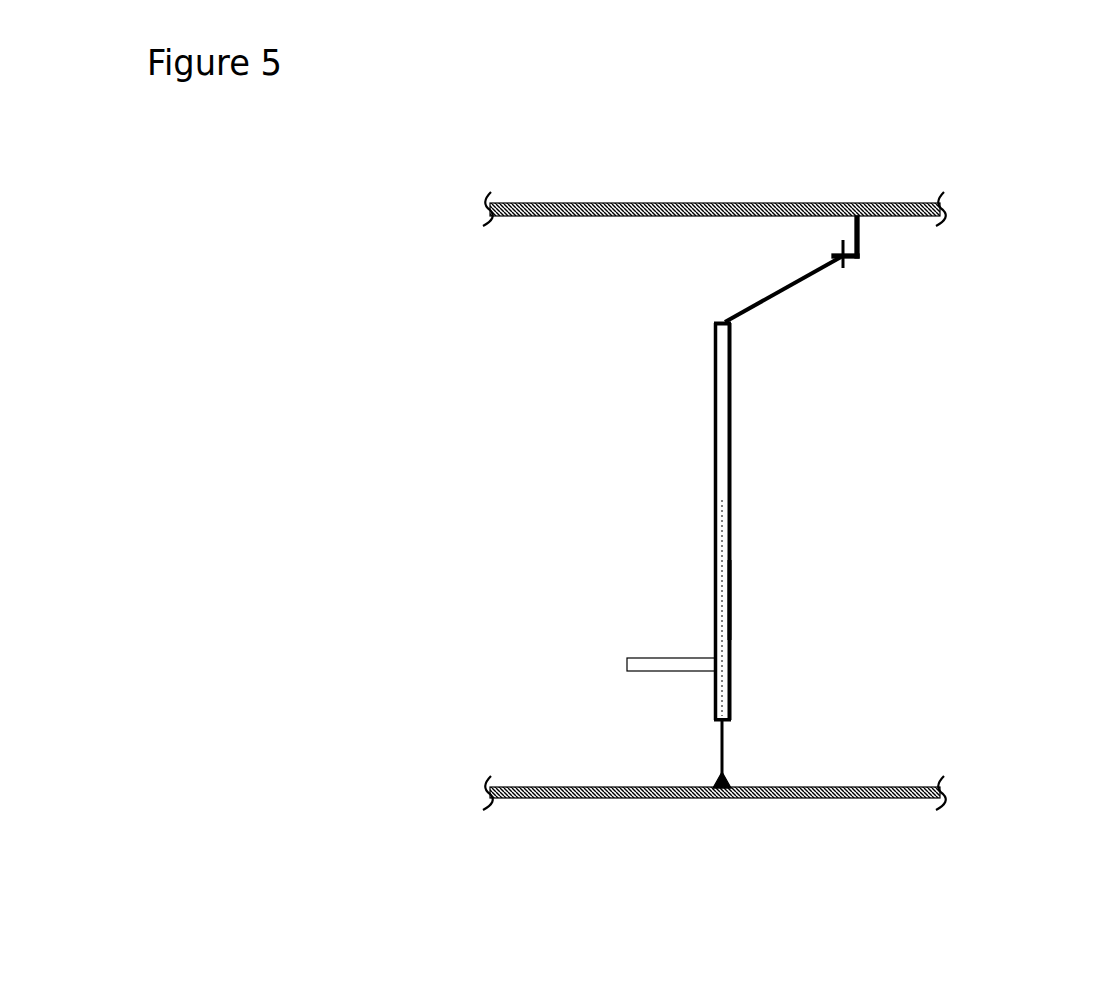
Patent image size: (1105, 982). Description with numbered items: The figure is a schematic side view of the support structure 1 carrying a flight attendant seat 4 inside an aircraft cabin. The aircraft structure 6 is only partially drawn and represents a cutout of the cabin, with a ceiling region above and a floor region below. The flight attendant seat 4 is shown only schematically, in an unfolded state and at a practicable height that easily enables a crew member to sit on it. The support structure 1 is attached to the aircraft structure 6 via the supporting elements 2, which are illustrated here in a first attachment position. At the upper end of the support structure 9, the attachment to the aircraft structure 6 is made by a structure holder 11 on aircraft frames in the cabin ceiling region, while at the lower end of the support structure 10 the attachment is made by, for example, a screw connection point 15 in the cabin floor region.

The support structure 1 is at (702, 424).
The supporting element 2 is at (717, 727).
The flight attendant seat 4 is at (745, 606).
The aircraft structure 6 is at (913, 787).
The upper end of the support structure 9 is at (734, 323).
The lower end of the support structure 10 is at (738, 723).
The structure holder 11 is at (833, 250).
The screw connection point 15 is at (733, 786).